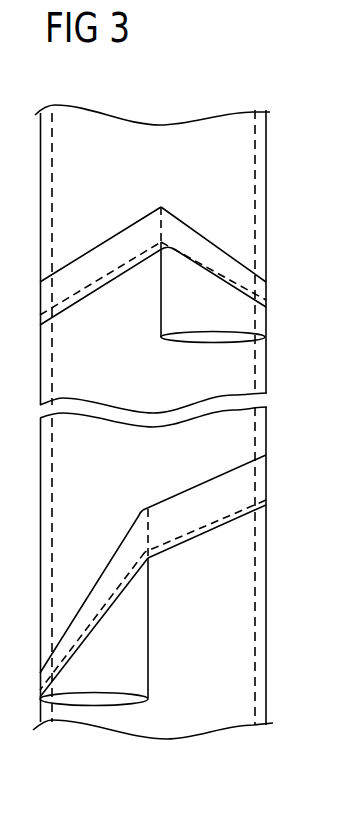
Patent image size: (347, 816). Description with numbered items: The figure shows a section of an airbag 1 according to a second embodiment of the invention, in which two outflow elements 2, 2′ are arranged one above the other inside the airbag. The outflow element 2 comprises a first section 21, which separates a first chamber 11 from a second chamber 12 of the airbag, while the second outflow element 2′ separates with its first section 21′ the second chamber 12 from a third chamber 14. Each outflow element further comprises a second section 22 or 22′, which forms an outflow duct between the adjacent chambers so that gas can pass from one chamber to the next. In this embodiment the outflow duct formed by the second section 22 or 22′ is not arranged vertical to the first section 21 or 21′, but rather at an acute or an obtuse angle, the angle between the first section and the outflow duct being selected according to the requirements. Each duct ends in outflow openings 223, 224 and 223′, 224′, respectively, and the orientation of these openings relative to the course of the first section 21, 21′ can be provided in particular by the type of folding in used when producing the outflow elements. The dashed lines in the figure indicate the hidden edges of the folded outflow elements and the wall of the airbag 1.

The airbag 1 is at (254, 96).
The first chamber 11 is at (240, 173).
The second chamber 12 is at (243, 372).
The third chamber 14 is at (247, 623).
The outflow element 2 is at (179, 266).
The first section 21 is at (82, 268).
The outflow opening 223 is at (204, 238).
The second section 22 is at (239, 301).
The outflow opening 224 is at (202, 340).
The second outflow element 2′ is at (153, 603).
The first section 21′ is at (195, 532).
The outflow opening 223′ is at (97, 580).
The second section 22′ is at (124, 643).
The outflow opening 224′ is at (97, 700).